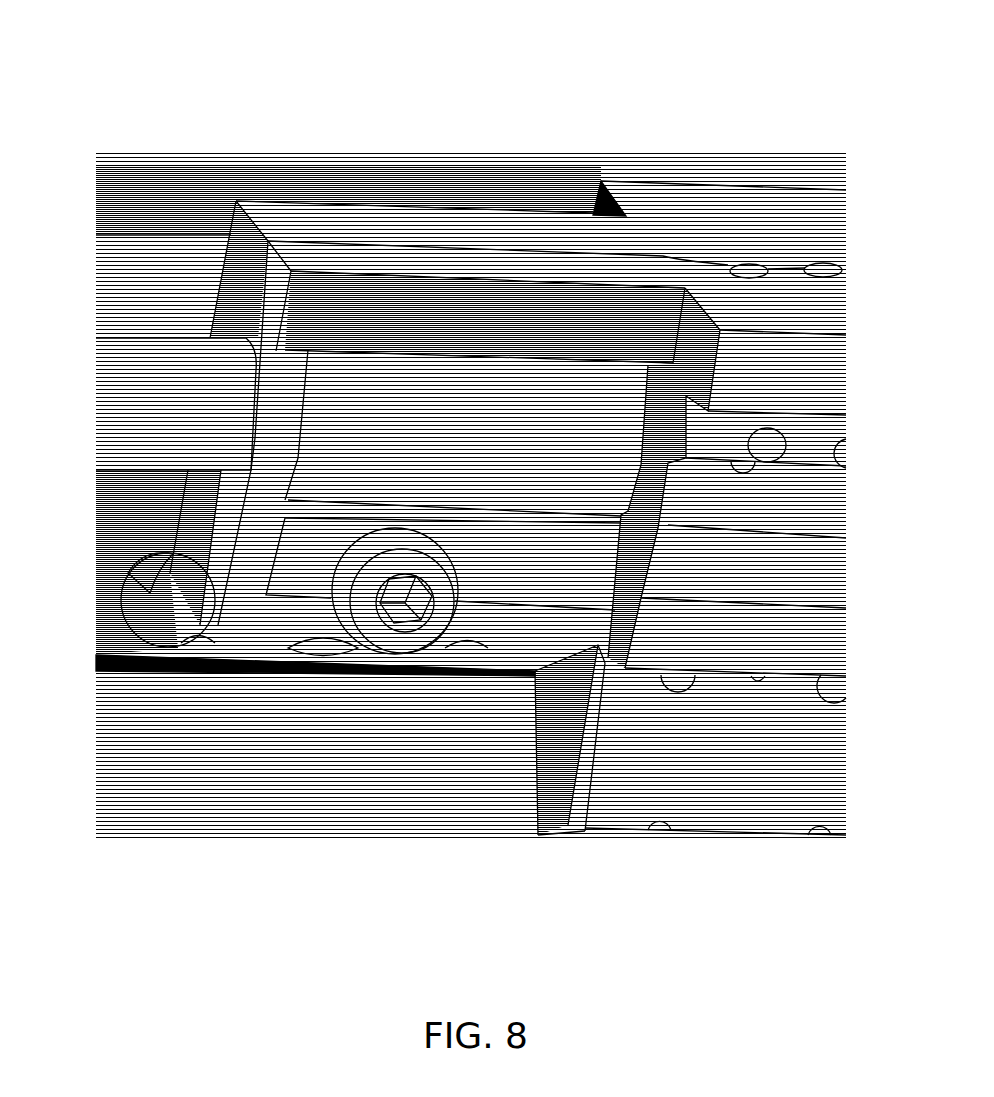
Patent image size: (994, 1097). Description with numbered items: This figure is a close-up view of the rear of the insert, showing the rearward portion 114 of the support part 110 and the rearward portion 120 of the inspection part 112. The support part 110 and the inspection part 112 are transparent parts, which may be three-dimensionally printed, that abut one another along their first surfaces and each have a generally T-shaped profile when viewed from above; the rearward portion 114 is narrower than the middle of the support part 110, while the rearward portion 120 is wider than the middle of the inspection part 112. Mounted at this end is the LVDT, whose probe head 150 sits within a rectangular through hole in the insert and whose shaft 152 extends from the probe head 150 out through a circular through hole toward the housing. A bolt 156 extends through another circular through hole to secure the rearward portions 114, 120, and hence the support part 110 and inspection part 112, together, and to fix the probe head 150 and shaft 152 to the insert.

The support part 110 is at (755, 210).
The inspection part 112 is at (805, 290).
The rearward portion 114 is at (423, 212).
The rearward portion 120 is at (500, 262).
The probe head 150 is at (360, 400).
The shaft 152 is at (112, 365).
The bolt 156 is at (395, 645).